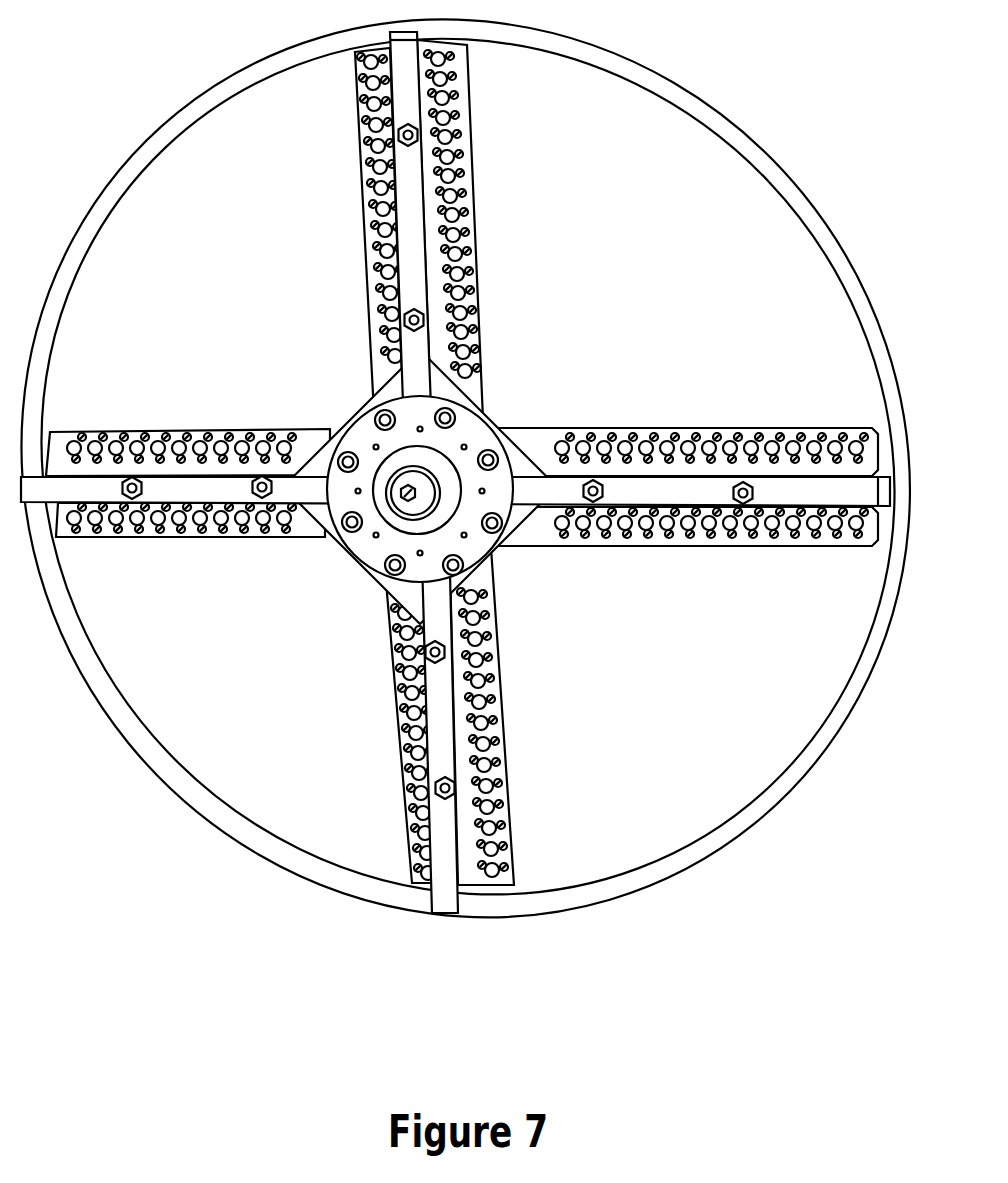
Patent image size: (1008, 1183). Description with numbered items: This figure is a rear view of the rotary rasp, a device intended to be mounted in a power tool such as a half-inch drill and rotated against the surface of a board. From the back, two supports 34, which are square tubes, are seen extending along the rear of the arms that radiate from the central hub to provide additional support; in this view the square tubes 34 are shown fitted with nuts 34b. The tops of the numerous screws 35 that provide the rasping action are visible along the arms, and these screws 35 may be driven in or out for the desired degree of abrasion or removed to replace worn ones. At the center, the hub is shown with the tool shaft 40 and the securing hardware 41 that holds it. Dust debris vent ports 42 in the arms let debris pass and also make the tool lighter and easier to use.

The supports 34 is at (213, 488).
The nuts 34b is at (262, 500).
The screws 35 is at (472, 250).
The tool shaft 40 is at (398, 500).
The securing hardware 41 is at (488, 458).
The dust debris vent ports 42 is at (152, 452).